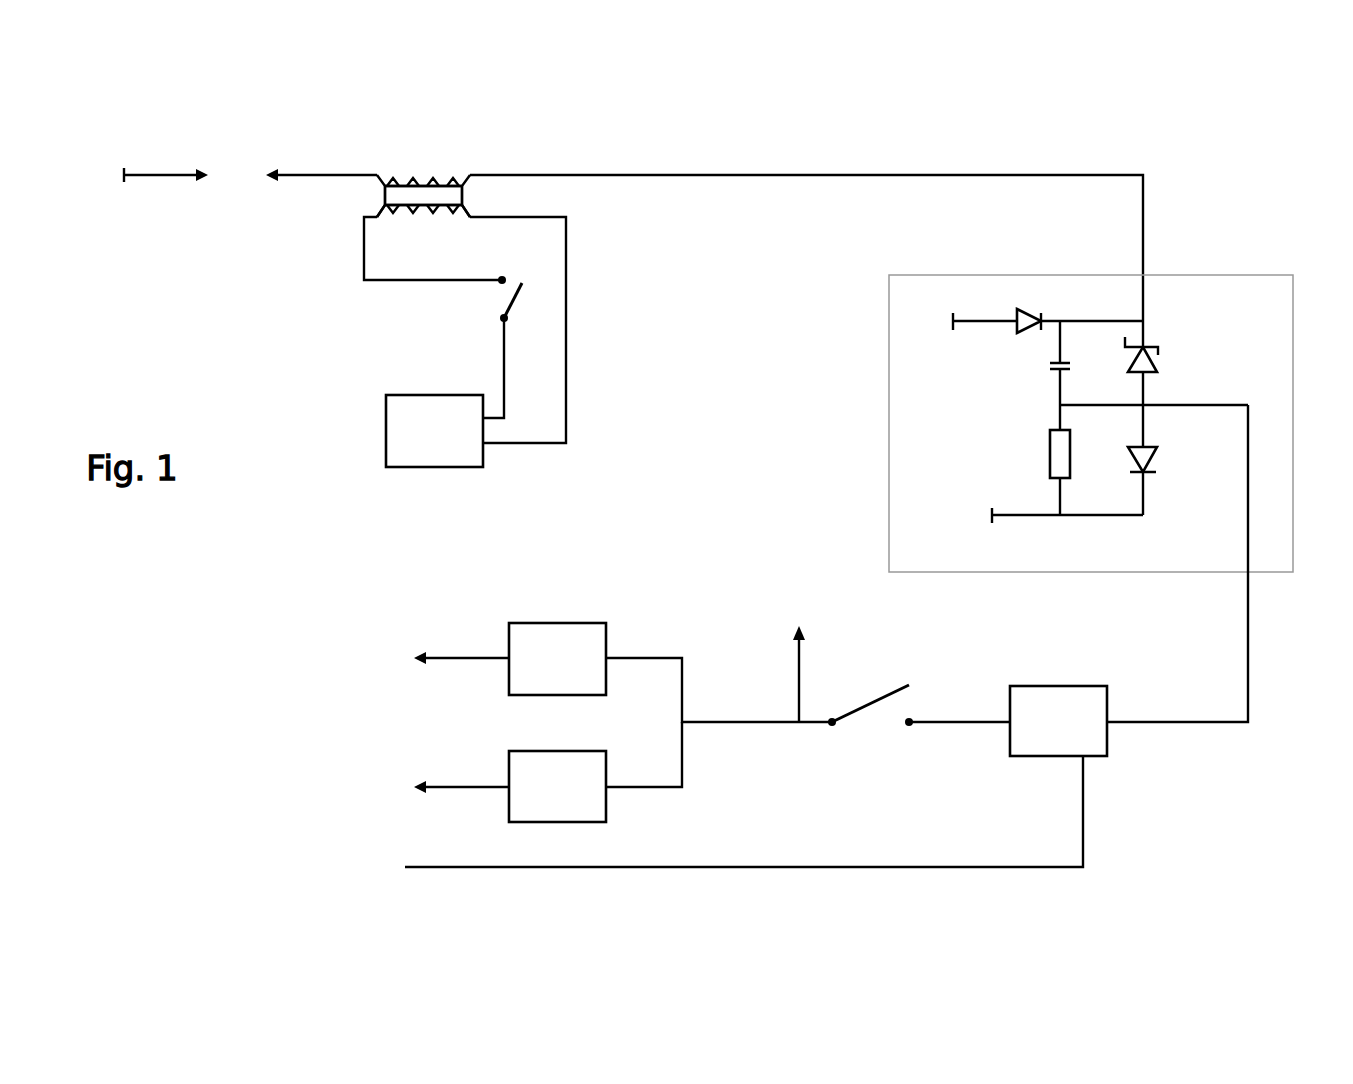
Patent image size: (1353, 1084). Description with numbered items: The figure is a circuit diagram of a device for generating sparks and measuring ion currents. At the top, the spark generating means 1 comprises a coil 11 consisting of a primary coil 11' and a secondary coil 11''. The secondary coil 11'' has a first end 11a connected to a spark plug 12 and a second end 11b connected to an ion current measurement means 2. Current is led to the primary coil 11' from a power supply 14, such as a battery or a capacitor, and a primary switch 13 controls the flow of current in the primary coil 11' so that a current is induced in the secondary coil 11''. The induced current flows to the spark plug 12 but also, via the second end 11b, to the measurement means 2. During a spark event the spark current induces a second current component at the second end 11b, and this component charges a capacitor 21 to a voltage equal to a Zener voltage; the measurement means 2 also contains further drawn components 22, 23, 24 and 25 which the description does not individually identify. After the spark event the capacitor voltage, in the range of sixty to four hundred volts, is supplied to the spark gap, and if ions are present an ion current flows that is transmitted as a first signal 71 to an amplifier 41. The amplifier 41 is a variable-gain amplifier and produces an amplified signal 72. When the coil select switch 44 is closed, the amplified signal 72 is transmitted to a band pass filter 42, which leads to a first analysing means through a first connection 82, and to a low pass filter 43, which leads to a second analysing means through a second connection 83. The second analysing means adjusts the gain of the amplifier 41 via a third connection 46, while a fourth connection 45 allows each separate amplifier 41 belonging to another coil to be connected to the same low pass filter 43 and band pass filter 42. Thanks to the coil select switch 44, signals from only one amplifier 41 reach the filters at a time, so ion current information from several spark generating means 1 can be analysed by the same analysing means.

The spark generating means 1 is at (427, 135).
The coil 11 is at (394, 154).
The primary coil 11' is at (391, 259).
The secondary coil 11'' is at (495, 155).
The first end 11a is at (330, 205).
The second end 11b is at (546, 153).
The spark plug 12 is at (244, 200).
The primary switch 13 is at (482, 301).
The power supply 14 is at (386, 428).
The ion current measurement means 2 is at (886, 395).
The capacitor 21 is at (1044, 366).
The resistor 22 is at (1042, 454).
The zener diode 23 is at (1170, 357).
The diode 24 is at (1157, 470).
The diode 25 is at (1010, 290).
The amplifier 41 is at (1112, 758).
The band pass filter 42 is at (506, 618).
The low pass filter 43 is at (506, 748).
The coil select switch 44 is at (867, 735).
The fourth connection 45 is at (796, 677).
The third connection 46 is at (786, 872).
The first signal 71 is at (1254, 633).
The amplified signal 72 is at (965, 728).
The first connection 82 is at (421, 660).
The second connection 83 is at (426, 788).